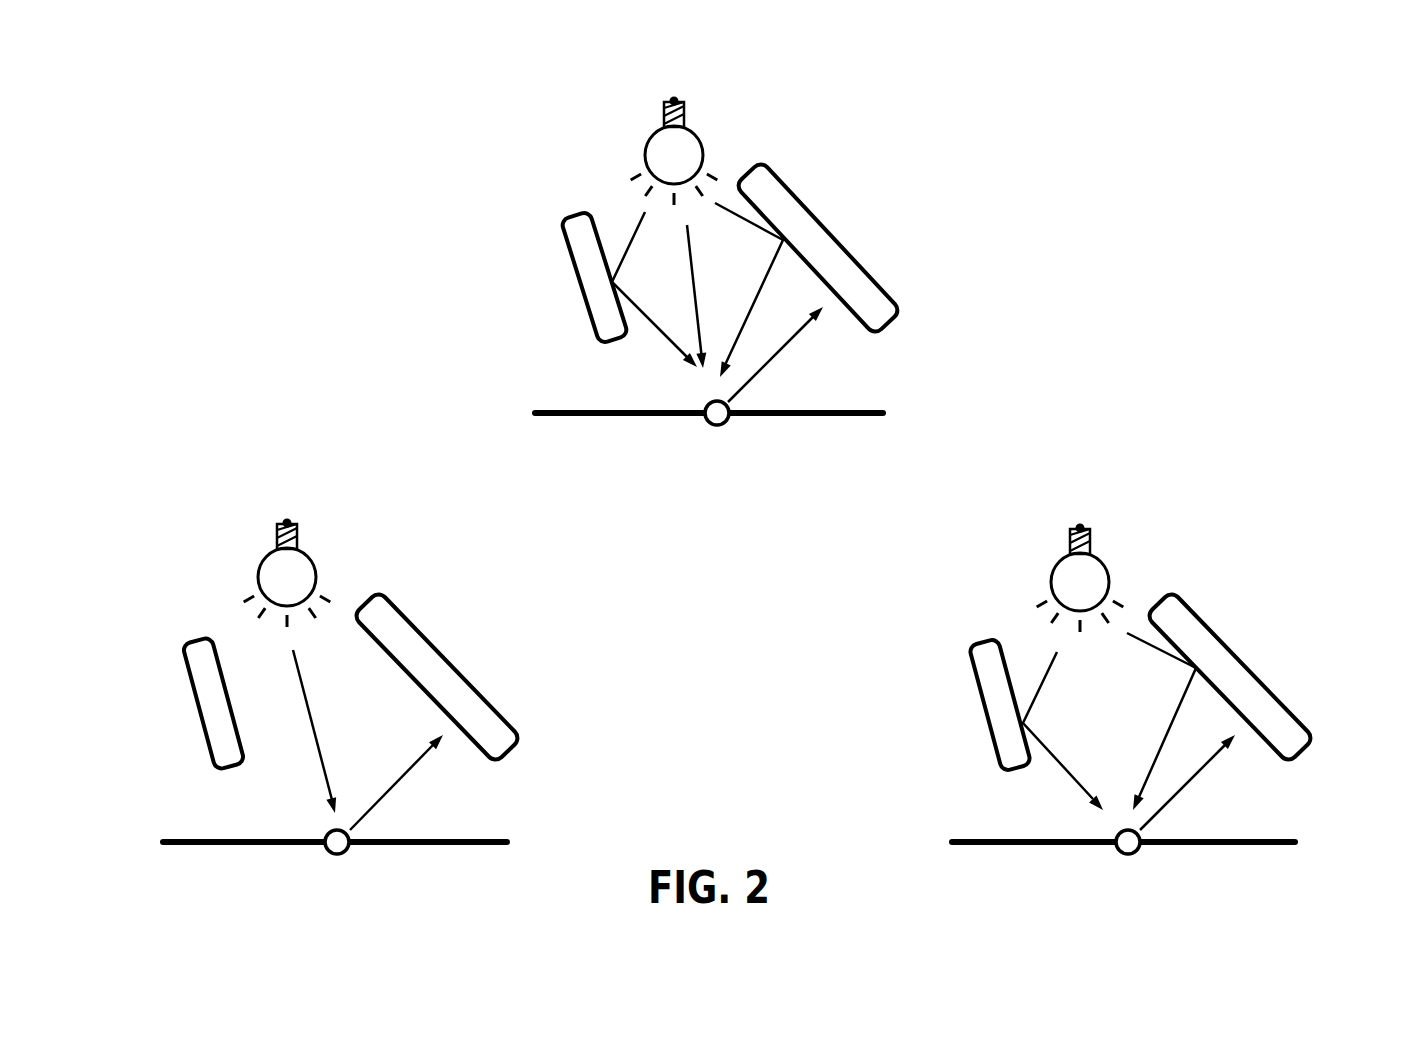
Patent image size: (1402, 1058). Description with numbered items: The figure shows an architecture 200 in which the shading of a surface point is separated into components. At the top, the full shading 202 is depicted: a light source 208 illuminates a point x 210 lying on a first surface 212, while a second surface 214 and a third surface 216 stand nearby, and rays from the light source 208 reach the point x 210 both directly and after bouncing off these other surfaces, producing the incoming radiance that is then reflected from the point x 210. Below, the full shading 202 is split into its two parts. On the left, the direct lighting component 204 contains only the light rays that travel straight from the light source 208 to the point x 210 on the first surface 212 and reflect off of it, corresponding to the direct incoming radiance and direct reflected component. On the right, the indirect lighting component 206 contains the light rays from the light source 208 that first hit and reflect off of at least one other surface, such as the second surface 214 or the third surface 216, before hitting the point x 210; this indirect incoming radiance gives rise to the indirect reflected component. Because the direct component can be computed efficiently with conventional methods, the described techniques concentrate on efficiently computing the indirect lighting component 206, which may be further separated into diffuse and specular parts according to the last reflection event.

The architecture 200 is at (116, 59).
The full shading 202 is at (692, 77).
The direct lighting component 204 is at (304, 495).
The indirect lighting component 206 is at (1099, 495).
The light source 208 is at (720, 365).
The point x 210 is at (698, 647).
The first surface 212 is at (555, 416).
The second surface 214 is at (558, 491).
The third surface 216 is at (840, 462).